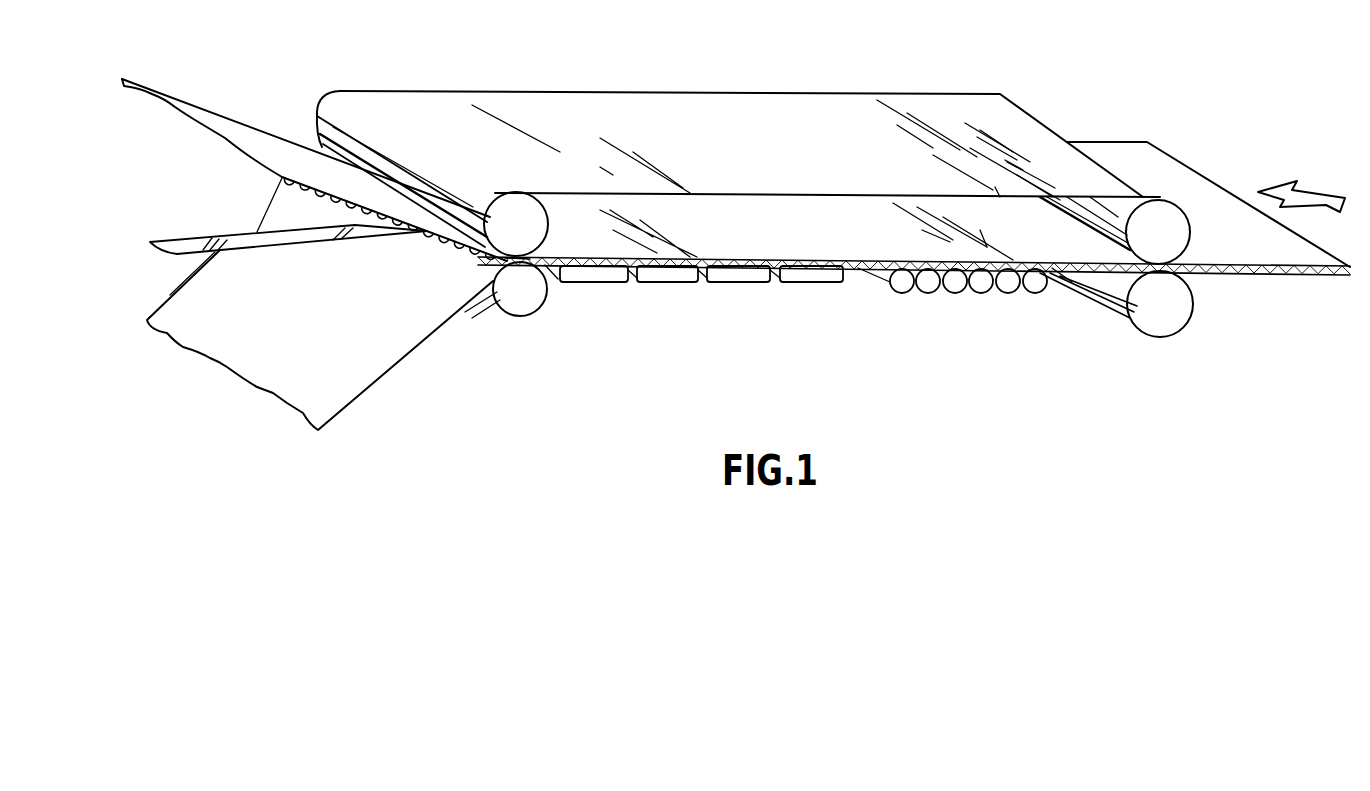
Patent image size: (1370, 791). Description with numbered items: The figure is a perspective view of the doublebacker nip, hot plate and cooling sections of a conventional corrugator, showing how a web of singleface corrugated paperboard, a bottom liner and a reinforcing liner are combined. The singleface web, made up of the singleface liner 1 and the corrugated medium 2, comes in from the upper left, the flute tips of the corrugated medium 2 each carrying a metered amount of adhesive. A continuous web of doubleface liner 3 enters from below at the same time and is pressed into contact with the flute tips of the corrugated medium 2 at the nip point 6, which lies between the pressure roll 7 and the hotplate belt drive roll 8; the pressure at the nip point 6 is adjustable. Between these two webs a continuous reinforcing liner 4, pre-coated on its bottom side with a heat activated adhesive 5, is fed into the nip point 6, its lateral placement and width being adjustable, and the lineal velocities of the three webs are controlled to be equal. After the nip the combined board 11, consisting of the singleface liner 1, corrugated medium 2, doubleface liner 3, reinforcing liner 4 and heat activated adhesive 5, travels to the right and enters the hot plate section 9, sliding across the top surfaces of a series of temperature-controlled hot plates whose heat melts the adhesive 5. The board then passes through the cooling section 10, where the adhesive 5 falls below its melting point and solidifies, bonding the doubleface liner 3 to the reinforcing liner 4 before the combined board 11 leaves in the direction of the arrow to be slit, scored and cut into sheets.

The singleface liner 1 is at (213, 118).
The corrugated medium 2 is at (282, 178).
The doubleface liner 3 is at (416, 350).
The reinforcing liner 4 is at (192, 240).
The heat activated adhesive 5 is at (192, 258).
The doublebacker nip 6 is at (517, 258).
The pressure roll 7 is at (532, 314).
The hotplate belt drive roll 8 is at (497, 192).
The hot plate section 9 is at (856, 279).
The cooling section 10 is at (860, 280).
The combined board 11 is at (607, 259).